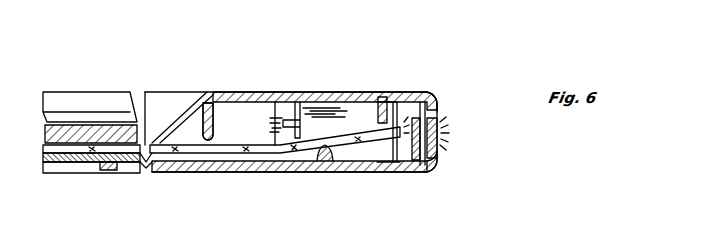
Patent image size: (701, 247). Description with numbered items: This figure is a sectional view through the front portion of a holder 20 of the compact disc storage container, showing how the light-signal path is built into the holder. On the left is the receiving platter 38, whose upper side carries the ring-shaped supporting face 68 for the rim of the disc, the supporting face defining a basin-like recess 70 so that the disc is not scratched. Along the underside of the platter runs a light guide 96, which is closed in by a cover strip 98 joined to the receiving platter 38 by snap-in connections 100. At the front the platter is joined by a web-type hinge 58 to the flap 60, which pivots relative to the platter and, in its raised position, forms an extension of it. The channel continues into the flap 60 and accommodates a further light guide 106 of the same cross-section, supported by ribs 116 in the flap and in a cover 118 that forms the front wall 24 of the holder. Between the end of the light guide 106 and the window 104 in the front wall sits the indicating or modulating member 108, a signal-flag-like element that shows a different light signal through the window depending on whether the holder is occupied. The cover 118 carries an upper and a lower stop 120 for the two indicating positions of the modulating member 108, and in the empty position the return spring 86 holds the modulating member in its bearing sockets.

The holder 20 is at (393, 91).
The front wall 24 is at (437, 107).
The receiving platter 38 is at (100, 100).
The web-type hinge 58 is at (145, 165).
The flap 60 is at (359, 92).
The ring-shaped supporting face 68 is at (119, 112).
The basin-like recess 70 is at (55, 122).
The return spring 86 is at (293, 102).
The light guide 96 is at (45, 147).
The cover strip 98 is at (60, 162).
The snap-in connections 100 is at (100, 170).
The window 104 is at (433, 133).
The light guide 106 is at (272, 155).
The indicating or modulating member 108 is at (418, 148).
The ribs 116 is at (225, 93).
The cover 118 is at (372, 172).
The stop 120 is at (410, 92).